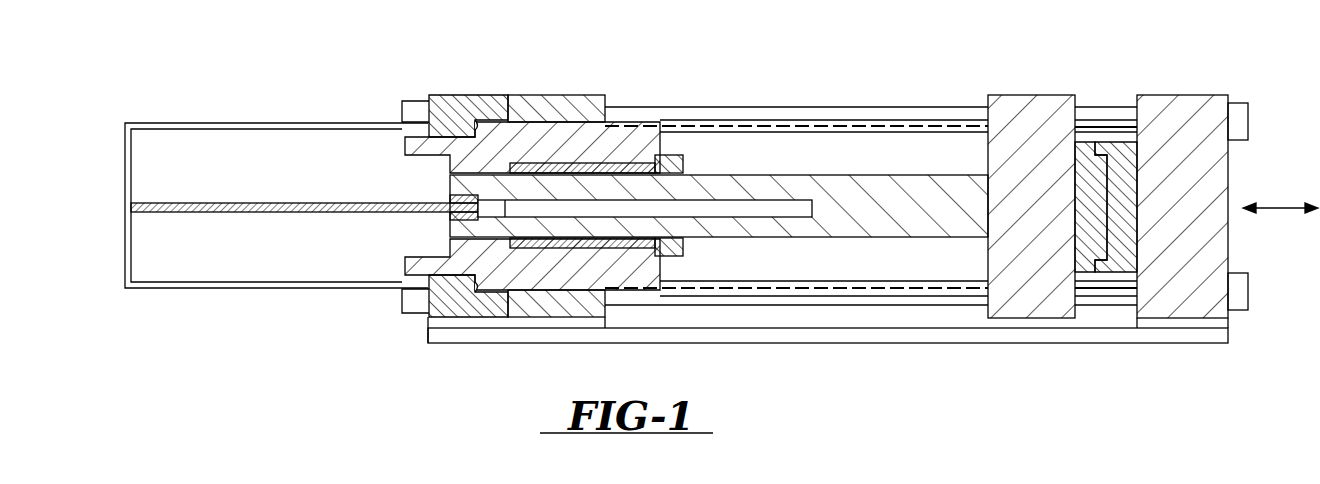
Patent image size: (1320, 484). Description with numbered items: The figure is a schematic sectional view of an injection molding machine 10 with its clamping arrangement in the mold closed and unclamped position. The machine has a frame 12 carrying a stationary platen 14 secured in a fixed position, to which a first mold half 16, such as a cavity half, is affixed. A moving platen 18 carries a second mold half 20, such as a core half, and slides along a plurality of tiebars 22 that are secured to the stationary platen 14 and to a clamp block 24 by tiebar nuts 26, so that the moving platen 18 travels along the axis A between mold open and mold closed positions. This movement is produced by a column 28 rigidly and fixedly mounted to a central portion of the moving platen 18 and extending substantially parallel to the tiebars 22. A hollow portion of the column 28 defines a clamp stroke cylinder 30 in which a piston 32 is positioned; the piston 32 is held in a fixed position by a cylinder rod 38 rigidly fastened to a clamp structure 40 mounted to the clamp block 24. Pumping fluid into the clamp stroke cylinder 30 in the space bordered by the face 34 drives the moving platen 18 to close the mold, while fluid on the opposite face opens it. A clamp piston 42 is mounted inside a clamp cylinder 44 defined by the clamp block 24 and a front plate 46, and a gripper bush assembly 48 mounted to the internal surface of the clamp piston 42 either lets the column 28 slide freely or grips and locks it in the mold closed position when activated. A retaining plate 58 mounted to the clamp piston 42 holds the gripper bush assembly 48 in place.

The injection molding machine 10 is at (711, 236).
The frame 12 is at (988, 344).
The stationary platen 14 is at (1200, 108).
The first mold half 16 is at (1118, 150).
The moving platen 18 is at (1022, 120).
The second mold half 20 is at (1088, 150).
The tiebars 22 is at (879, 108).
The clamp block 24 is at (455, 104).
The tiebar nuts 26 is at (414, 108).
The column 28 is at (897, 188).
The clamp stroke cylinder 30 is at (775, 200).
The piston 32 is at (478, 222).
The face 34 is at (505, 203).
The cylinder rod 38 is at (267, 202).
The clamp structure 40 is at (125, 262).
The clamp piston 42 is at (562, 135).
The clamp cylinder 44 is at (485, 108).
The front plate 46 is at (592, 95).
The gripper bush assembly 48 is at (630, 167).
The retaining plate 58 is at (688, 163).